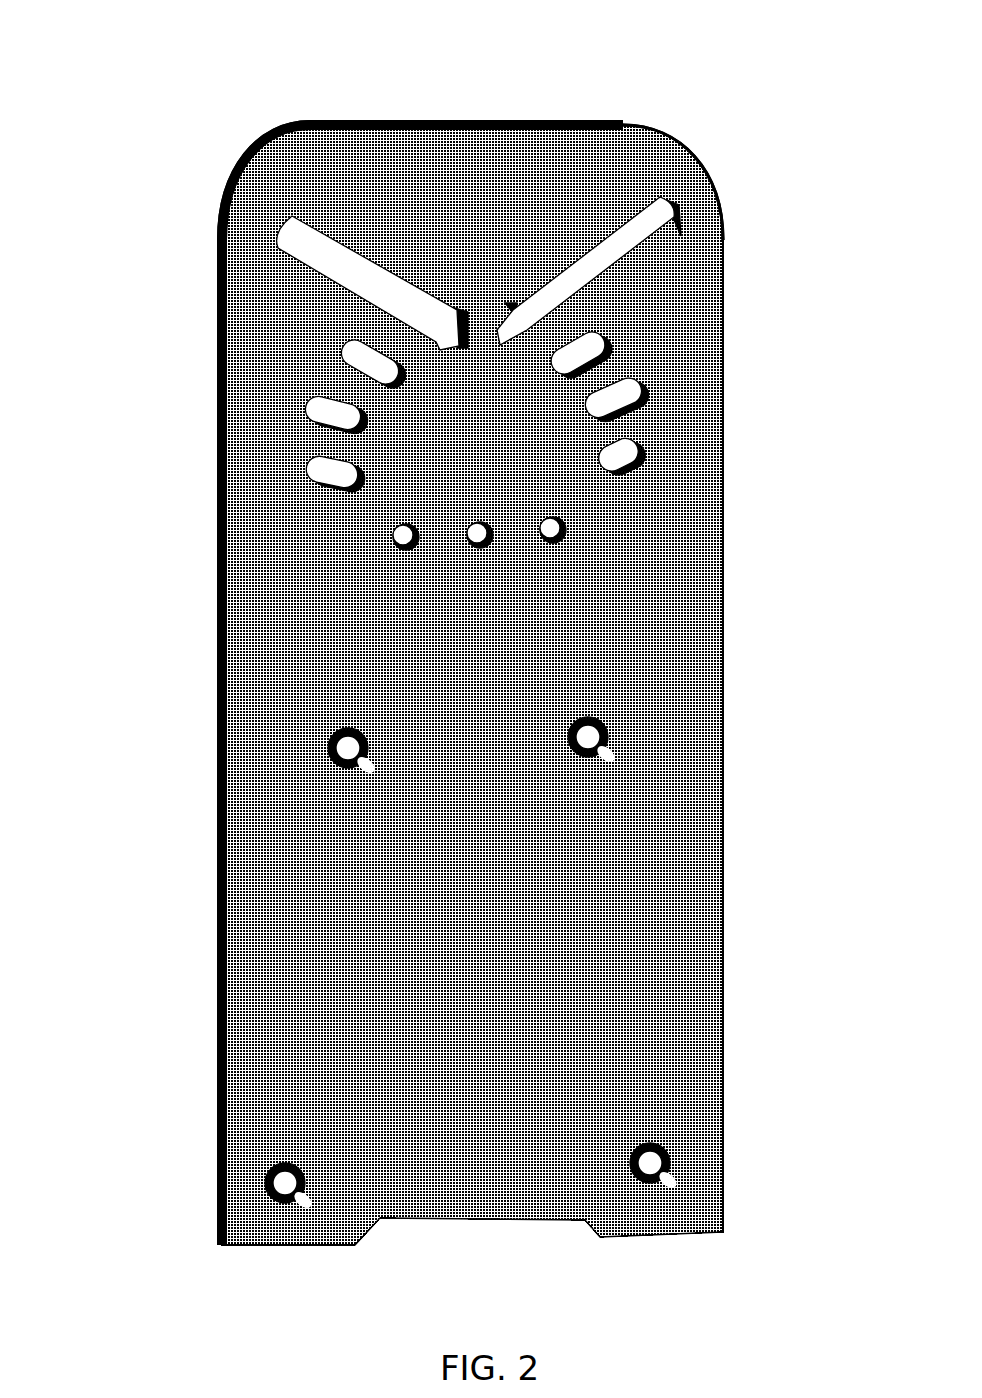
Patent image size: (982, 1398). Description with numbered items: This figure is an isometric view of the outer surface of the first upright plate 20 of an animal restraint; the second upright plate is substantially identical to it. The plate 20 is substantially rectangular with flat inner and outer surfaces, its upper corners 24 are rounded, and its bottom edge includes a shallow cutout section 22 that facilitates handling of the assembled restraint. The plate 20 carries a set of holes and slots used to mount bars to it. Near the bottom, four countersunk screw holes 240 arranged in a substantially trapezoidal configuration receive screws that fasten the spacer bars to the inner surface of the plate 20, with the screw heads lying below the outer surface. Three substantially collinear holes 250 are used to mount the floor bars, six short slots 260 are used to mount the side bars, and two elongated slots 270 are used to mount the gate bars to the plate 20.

The first upright plate 20 is at (590, 54).
The cutout section 22 is at (460, 1215).
The rounded upper corners 24 is at (261, 173).
The screw holes 240 is at (330, 755).
The collinear holes 250 is at (398, 545).
The short slots 260 is at (332, 352).
The elongated slots 270 is at (238, 227).